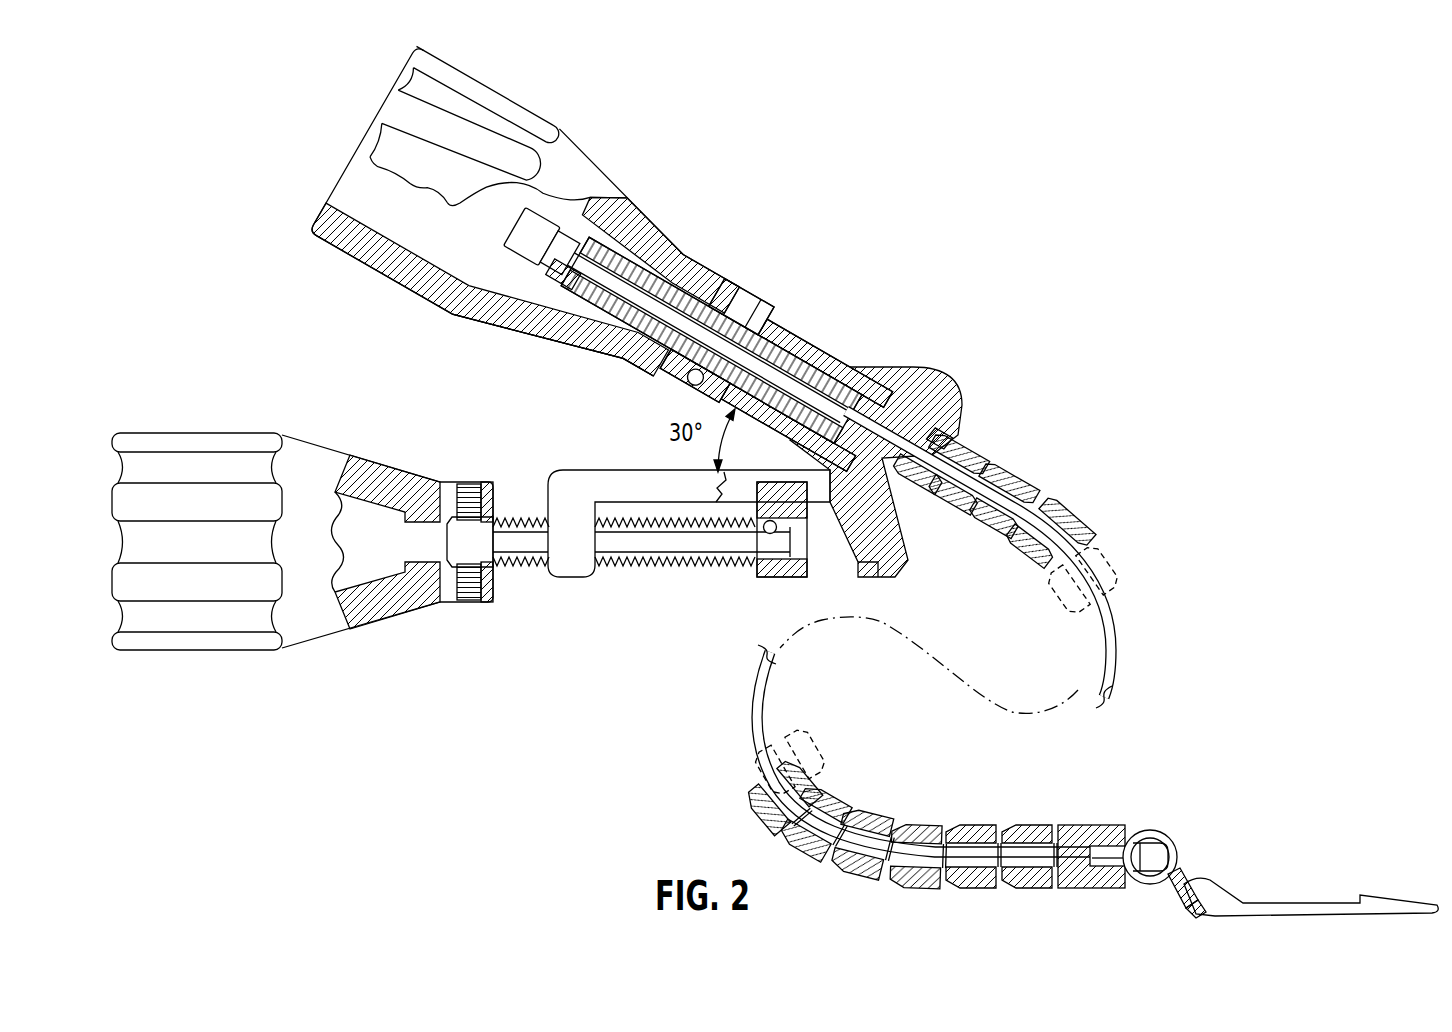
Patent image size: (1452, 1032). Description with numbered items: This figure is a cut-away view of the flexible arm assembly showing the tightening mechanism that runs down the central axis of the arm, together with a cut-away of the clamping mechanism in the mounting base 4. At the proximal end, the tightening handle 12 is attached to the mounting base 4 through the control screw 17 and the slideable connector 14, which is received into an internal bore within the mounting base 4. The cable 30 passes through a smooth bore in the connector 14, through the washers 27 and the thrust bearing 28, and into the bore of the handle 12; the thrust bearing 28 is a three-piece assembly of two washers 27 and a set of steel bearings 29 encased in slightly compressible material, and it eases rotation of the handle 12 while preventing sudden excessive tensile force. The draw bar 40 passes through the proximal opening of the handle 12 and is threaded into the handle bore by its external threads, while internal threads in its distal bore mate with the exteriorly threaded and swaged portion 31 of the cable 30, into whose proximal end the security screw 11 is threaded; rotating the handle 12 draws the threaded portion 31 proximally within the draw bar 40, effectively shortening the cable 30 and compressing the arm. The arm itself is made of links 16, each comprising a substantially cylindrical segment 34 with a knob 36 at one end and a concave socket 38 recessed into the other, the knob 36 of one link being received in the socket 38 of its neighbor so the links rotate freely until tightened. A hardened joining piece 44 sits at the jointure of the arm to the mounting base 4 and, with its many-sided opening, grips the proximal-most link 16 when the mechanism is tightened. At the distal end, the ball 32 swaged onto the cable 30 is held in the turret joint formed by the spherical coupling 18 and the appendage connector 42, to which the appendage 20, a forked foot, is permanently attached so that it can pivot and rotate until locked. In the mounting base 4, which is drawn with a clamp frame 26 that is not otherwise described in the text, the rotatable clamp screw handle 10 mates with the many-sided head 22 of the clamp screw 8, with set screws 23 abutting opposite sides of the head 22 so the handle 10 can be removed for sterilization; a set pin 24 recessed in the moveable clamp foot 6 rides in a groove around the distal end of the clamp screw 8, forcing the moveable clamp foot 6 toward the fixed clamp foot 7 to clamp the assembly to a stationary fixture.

The mounting base 4 is at (940, 385).
The moveable clamp foot 6 is at (777, 580).
The fixed clamp foot 7 is at (896, 554).
The clamp screw 8 is at (628, 564).
The clamp screw handle 10 is at (219, 651).
The security screw 11 is at (618, 352).
The tightening handle 12 is at (366, 263).
The slideable connector 14 is at (804, 360).
The links 16 is at (1027, 562).
The control screw 17 is at (512, 237).
The spherical coupling 18 is at (1116, 825).
The appendage 20 is at (1305, 903).
The head of the clamp screw 22 is at (449, 528).
The set screws 23 is at (470, 600).
The set pin 24 is at (778, 528).
The clamp frame 26 is at (562, 469).
The washers 27 is at (740, 290).
The thrust bearing 28 is at (754, 270).
The steel bearings 29 is at (684, 388).
The cable 30 is at (1113, 650).
The threaded and swaged portion of cable 31 is at (786, 404).
The ball 32 is at (1150, 840).
The cylindrical segment 34 is at (848, 800).
The knob 36 is at (812, 782).
The concave socket 38 is at (1068, 524).
The draw bar 40 is at (757, 420).
The appendage connector 42 is at (1178, 865).
The joining piece 44 is at (950, 440).